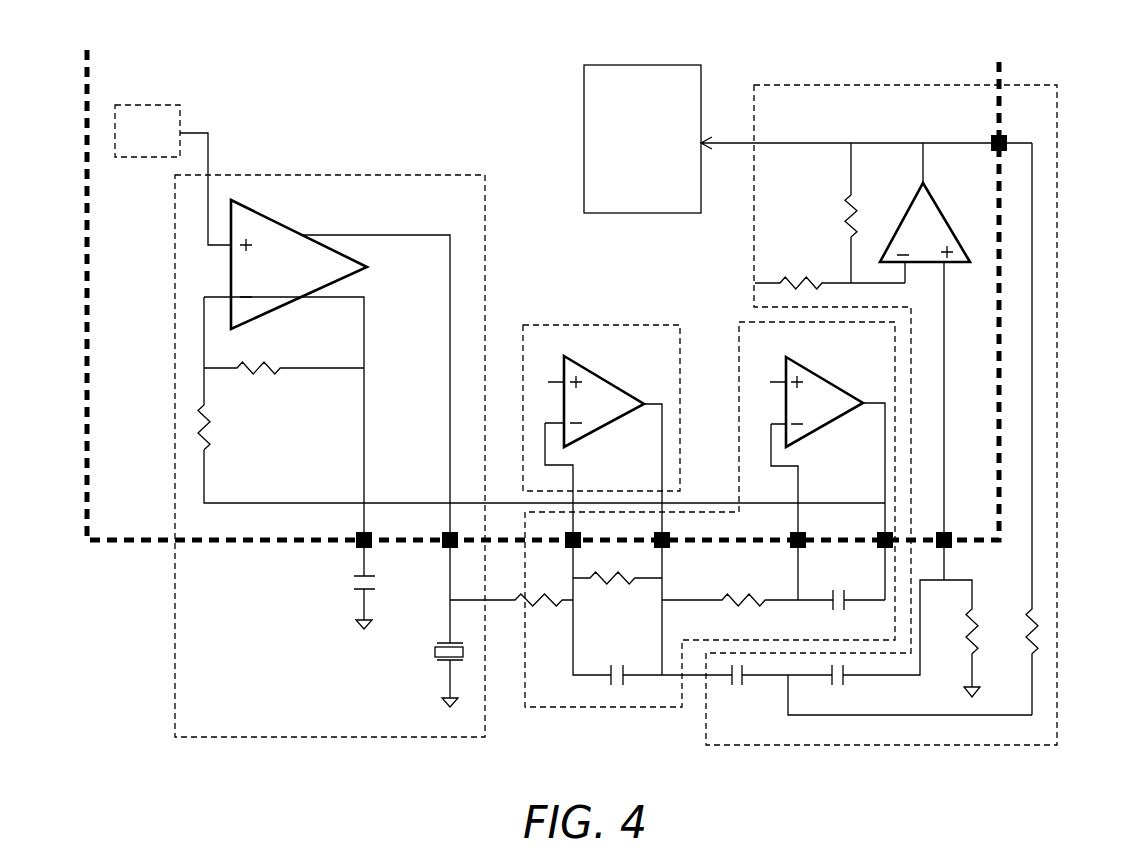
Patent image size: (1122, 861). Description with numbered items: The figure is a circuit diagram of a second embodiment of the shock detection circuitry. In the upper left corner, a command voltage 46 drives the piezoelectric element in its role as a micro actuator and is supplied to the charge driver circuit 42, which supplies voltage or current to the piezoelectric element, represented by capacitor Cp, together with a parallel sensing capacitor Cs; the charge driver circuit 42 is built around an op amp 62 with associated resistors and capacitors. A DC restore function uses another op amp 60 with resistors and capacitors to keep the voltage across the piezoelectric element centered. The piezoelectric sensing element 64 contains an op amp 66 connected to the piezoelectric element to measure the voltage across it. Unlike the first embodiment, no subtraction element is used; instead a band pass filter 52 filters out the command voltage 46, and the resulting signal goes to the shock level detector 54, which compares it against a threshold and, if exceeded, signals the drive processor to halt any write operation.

The charge driver circuit 42 is at (297, 456).
The command voltage 46 is at (163, 103).
The band pass filter 52 is at (1047, 355).
The shock level detector 54 is at (584, 118).
The op amp 60 is at (832, 393).
The op amp 62 is at (275, 230).
The piezoelectric sensing element 64 is at (590, 401).
The op amp 66 is at (607, 398).